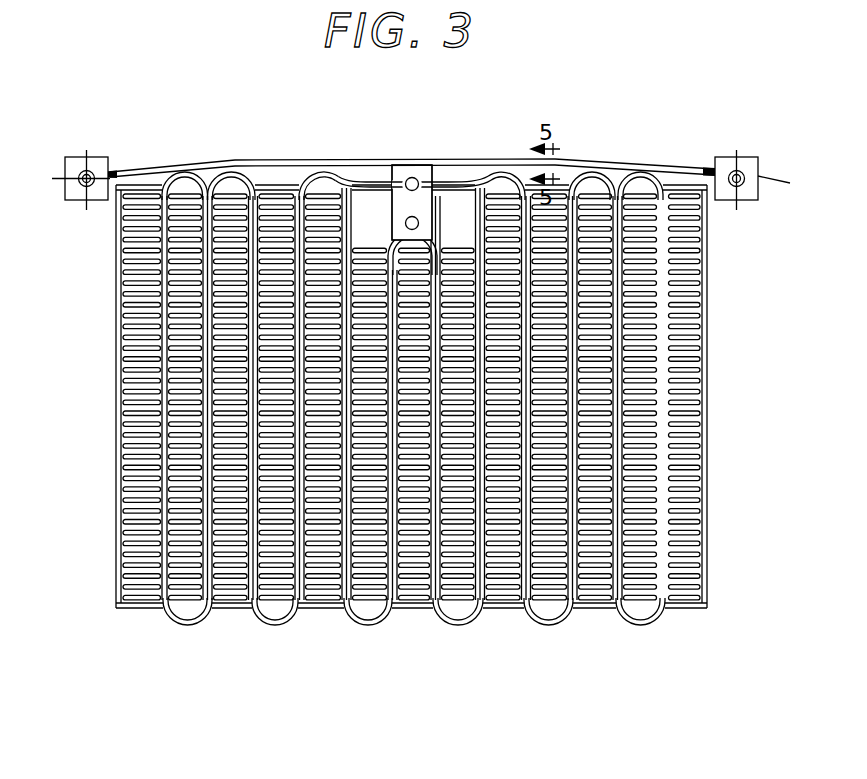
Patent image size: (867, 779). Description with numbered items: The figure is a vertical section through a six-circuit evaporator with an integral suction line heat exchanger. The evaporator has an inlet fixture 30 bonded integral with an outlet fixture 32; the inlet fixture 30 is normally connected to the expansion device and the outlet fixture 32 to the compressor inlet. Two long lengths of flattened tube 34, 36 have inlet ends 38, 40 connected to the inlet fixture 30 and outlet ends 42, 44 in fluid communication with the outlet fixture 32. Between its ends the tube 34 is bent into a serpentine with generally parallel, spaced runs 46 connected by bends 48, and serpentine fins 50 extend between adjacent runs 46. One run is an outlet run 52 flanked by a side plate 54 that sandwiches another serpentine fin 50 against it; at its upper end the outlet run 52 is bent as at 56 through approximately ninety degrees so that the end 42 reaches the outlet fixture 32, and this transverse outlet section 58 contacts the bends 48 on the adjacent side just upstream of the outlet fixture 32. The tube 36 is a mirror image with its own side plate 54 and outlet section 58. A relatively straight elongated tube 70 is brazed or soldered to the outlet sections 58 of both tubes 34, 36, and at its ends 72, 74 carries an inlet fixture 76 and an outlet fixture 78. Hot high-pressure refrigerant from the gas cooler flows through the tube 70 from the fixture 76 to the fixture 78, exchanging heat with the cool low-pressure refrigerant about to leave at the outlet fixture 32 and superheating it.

The inlet fixture 30 is at (377, 248).
The outlet fixture 32 is at (438, 166).
The flattened tube 34 is at (568, 628).
The flattened tube 36 is at (276, 628).
The inlet end 38 is at (414, 238).
The inlet end 40 is at (358, 168).
The outlet end 42 is at (455, 180).
The outlet end 44 is at (386, 180).
The runs 46 is at (662, 377).
The bends 48 is at (490, 176).
The serpentine fins 50 is at (640, 410).
The outlet run 52 is at (663, 280).
The side plate 54 is at (118, 350).
The bend 56 is at (680, 173).
The outlet section 58 is at (272, 163).
The tube 70 is at (207, 159).
The end 72 is at (114, 175).
The end 74 is at (713, 160).
The inlet fixture 76 is at (72, 157).
The outlet fixture 78 is at (762, 172).